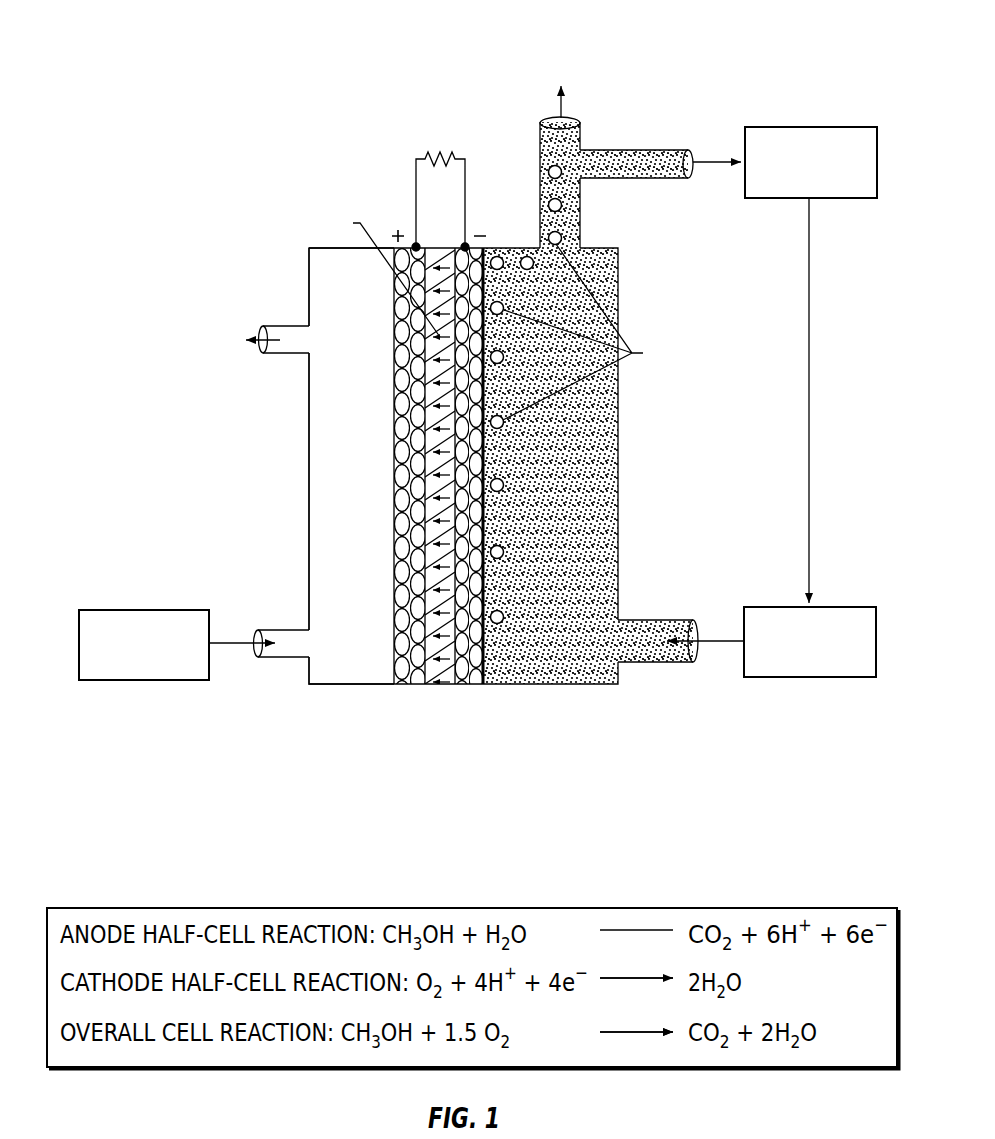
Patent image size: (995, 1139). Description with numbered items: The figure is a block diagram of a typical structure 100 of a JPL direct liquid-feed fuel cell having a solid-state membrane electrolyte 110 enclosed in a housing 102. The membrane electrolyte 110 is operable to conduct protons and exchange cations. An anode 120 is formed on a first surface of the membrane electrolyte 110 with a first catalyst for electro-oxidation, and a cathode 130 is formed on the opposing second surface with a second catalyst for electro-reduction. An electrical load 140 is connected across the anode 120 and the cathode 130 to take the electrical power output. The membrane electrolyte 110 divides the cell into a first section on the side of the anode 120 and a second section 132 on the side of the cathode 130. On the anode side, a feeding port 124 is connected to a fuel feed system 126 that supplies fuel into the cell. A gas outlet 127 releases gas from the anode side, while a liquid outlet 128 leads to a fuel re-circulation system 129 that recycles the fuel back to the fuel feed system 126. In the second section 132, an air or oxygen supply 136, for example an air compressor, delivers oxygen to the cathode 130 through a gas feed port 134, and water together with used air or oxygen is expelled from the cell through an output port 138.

The fuel cell structure 100 is at (257, 110).
The housing 102 is at (580, 685).
The membrane electrolyte 110 is at (435, 685).
The anode 120 is at (463, 685).
The feeding port 124 is at (652, 622).
The fuel feed system 126 is at (808, 677).
The gas outlet 127 is at (540, 130).
The liquid outlet 128 is at (625, 148).
The fuel re-circulation system 129 is at (810, 127).
The cathode 130 is at (407, 685).
The second section 132 is at (315, 497).
The gas feed port 134 is at (282, 628).
The air or oxygen supply 136 is at (153, 610).
The output port 138 is at (290, 325).
The electrical load 140 is at (437, 157).